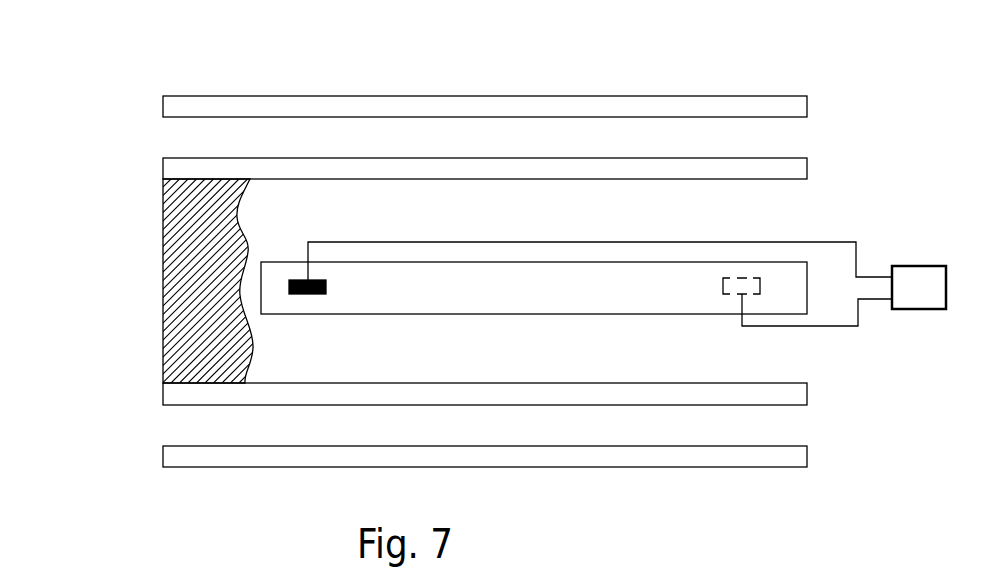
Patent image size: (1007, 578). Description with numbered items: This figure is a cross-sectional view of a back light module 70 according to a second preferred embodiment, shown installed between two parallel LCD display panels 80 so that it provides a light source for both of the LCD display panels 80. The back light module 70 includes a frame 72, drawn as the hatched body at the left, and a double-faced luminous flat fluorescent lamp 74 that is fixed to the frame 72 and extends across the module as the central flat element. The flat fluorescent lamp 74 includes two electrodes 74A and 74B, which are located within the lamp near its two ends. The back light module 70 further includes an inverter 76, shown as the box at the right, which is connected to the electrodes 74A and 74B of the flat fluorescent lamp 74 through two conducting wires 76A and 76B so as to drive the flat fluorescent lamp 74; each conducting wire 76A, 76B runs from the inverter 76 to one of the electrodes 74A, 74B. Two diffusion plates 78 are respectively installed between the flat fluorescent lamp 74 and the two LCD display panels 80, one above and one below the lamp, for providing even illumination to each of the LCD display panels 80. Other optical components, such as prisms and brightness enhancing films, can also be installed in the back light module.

The back light module 70 is at (145, 222).
The frame 72 is at (163, 295).
The double-faced luminous flat fluorescent lamp 74 is at (398, 262).
The electrode 74A is at (321, 297).
The electrode 74B is at (732, 278).
The inverter 76 is at (932, 301).
The conducting wire 76A is at (838, 242).
The conducting wire 76B is at (843, 327).
The diffusion plate 78 is at (163, 162).
The LCD display panel 80 is at (163, 97).